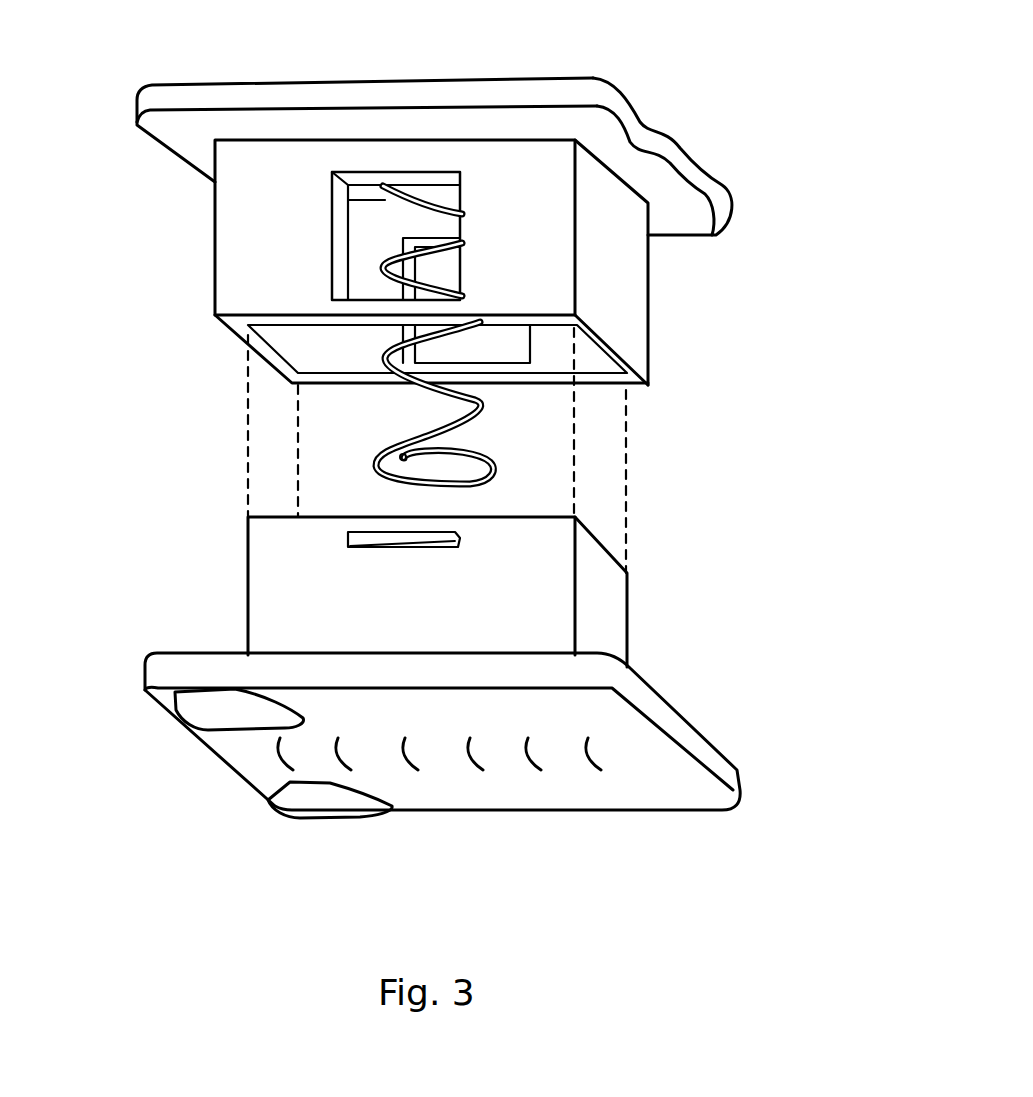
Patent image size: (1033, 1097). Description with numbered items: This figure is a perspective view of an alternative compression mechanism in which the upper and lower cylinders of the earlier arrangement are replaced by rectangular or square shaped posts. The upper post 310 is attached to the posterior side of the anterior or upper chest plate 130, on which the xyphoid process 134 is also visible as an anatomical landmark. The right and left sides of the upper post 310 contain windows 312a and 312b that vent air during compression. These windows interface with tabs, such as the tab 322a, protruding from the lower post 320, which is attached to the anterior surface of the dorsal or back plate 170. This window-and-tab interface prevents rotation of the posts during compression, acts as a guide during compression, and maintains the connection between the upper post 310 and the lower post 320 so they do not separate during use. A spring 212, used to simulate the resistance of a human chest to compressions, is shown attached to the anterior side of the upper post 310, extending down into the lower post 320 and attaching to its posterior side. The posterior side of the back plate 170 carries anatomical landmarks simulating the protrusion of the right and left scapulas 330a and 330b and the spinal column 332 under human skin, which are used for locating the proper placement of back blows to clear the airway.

The chest plate 130 is at (296, 100).
The xyphoid process 134 is at (670, 147).
The upper post 310 is at (618, 286).
The window 312a is at (387, 218).
The window 312b is at (498, 343).
The coil spring 212 is at (420, 430).
The lower post 320 is at (605, 633).
The tab 322a is at (460, 540).
The back plate 170 is at (662, 720).
The right scapula 330a is at (215, 708).
The left scapula 330b is at (325, 792).
The spinal column 332 is at (285, 758).